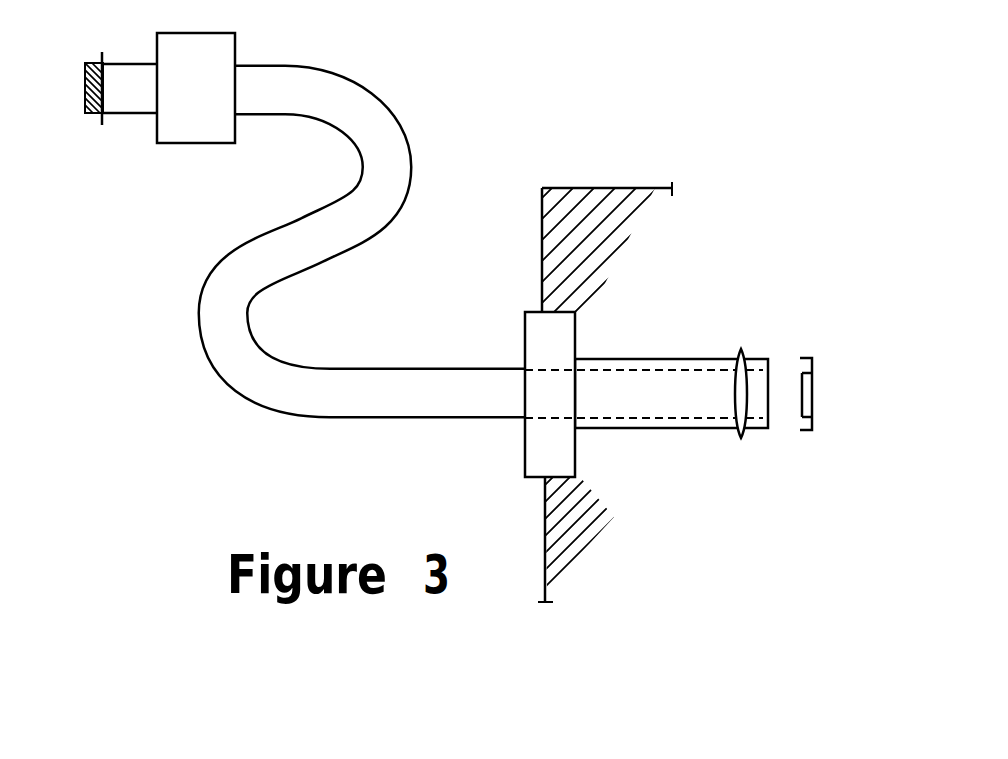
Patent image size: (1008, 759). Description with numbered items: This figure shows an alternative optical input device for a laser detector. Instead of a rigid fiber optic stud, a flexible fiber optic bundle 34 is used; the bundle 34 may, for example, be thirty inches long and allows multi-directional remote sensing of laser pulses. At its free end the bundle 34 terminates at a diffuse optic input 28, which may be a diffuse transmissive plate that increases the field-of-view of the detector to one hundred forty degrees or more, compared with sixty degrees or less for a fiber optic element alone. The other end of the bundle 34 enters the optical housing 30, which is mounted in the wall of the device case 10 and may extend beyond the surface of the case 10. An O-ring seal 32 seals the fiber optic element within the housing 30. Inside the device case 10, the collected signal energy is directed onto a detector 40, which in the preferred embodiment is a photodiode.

The device case 10 is at (607, 188).
The diffuse optic input 28 is at (88, 63).
The optical housing 30 is at (525, 438).
The O-ring seal 32 is at (742, 438).
The flexible fiber optic bundle 34 is at (240, 387).
The detector 40 is at (813, 400).